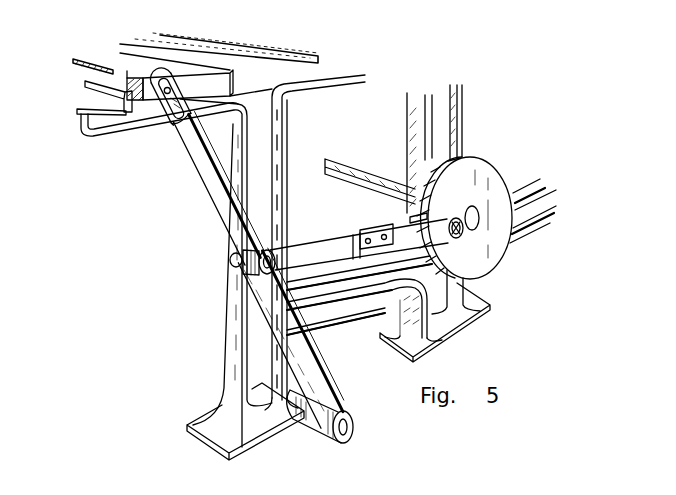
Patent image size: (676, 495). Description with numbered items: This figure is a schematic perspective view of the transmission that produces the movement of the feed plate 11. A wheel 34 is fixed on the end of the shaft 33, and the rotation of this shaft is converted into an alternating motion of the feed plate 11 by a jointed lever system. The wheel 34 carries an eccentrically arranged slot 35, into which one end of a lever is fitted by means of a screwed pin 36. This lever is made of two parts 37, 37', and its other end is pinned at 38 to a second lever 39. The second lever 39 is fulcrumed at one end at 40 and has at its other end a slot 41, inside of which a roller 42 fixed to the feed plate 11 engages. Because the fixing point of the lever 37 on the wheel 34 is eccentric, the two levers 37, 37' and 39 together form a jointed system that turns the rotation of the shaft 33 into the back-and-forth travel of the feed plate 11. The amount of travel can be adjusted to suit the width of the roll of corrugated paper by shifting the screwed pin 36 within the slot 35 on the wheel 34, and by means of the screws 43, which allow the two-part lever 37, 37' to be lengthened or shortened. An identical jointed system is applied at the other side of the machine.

The feed plate 11 is at (120, 112).
The shaft 33 is at (375, 177).
The wheel 34 is at (478, 263).
The eccentrically arranged slot 35 is at (413, 218).
The screwed pin 36 is at (462, 232).
The lever 37 is at (370, 229).
The lever part 37' is at (353, 243).
The pin 38 is at (240, 268).
The second lever 39 is at (227, 245).
The fulcrum 40 is at (348, 412).
The slot 41 is at (176, 132).
The roller 42 is at (172, 119).
The screws 43 is at (355, 231).